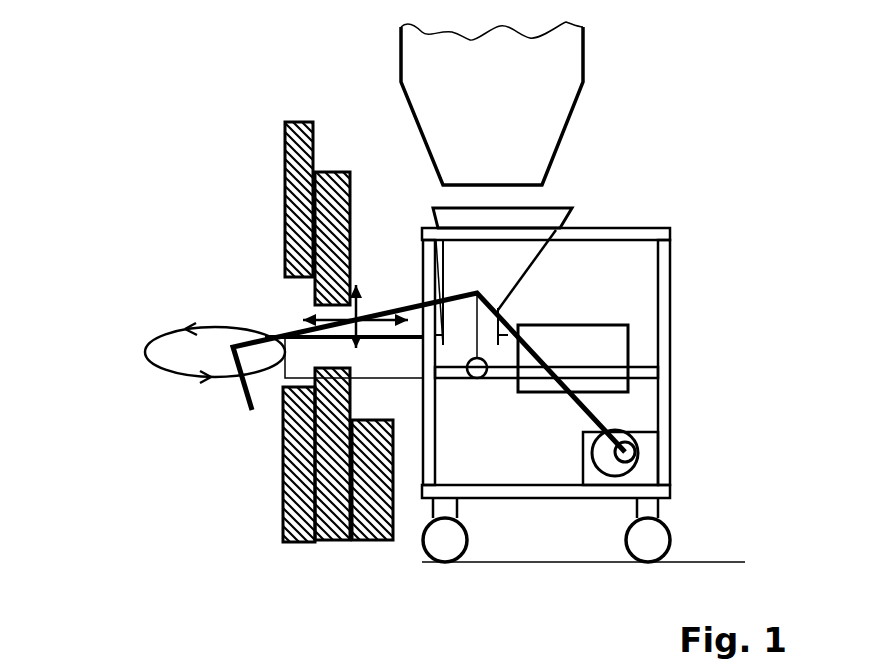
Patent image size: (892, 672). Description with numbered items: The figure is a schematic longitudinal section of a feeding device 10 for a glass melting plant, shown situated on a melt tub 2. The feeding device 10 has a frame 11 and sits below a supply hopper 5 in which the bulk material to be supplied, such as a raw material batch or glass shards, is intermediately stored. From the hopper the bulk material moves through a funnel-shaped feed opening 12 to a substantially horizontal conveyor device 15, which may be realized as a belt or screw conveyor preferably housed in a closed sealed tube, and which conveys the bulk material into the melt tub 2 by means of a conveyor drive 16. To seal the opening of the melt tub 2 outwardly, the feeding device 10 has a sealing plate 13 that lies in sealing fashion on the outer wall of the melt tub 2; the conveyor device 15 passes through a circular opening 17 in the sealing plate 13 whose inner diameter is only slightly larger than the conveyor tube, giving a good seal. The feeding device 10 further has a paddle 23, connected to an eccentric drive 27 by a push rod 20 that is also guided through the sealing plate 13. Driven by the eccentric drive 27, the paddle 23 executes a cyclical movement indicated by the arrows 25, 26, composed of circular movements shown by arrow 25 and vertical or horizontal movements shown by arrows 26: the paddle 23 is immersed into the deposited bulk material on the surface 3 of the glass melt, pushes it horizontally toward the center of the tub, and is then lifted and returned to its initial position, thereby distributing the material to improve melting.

The melt tub 2 is at (292, 170).
The surface of the glass melt 3 is at (283, 400).
The supply hopper 5 is at (543, 92).
The feeding device 10 is at (607, 329).
The frame 11 is at (670, 270).
The funnel-shaped feed opening 12 is at (542, 217).
The sealing plate 13 is at (350, 213).
The conveyor device 15 is at (382, 353).
The conveyor drive 16 is at (615, 345).
The circular opening 17 is at (298, 366).
The push rod 20 is at (380, 305).
The paddle 23 is at (270, 385).
The arrow indicating circular movement 25 is at (165, 337).
The arrow indicating vertical or horizontal movement 26 is at (300, 306).
The eccentric drive 27 is at (640, 444).